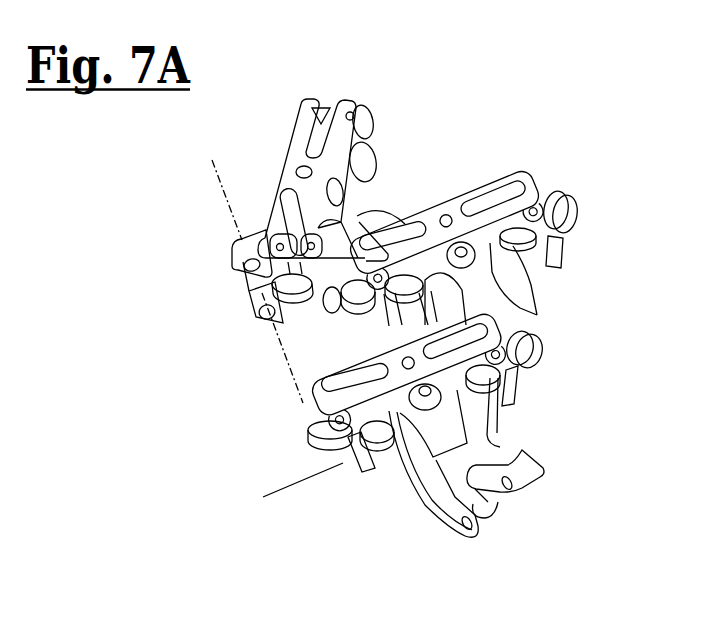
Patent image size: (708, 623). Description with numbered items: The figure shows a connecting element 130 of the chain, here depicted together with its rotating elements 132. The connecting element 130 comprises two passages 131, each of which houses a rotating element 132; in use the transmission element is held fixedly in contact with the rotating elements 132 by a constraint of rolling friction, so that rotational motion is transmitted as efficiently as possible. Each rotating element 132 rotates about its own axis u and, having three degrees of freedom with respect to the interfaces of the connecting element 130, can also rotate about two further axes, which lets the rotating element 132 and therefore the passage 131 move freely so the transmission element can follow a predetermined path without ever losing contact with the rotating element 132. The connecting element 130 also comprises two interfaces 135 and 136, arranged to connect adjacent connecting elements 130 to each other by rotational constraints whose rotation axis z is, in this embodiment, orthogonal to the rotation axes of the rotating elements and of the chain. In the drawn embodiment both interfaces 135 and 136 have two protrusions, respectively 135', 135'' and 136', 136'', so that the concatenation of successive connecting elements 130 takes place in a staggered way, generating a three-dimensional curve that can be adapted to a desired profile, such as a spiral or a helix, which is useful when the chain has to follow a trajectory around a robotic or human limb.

The connecting element 130 is at (406, 132).
The passage 131 is at (530, 408).
The rotating element 132 is at (547, 193).
The interface 135 is at (502, 474).
The protrusion of interface 135 135' is at (557, 445).
The protrusion of interface 135 135'' is at (542, 534).
The interface 136 is at (185, 284).
The protrusion of interface 136 136' is at (185, 248).
The protrusion of interface 136 136'' is at (203, 318).
The rotation axis z is at (251, 281).
The own axis of the rotating element u is at (300, 479).